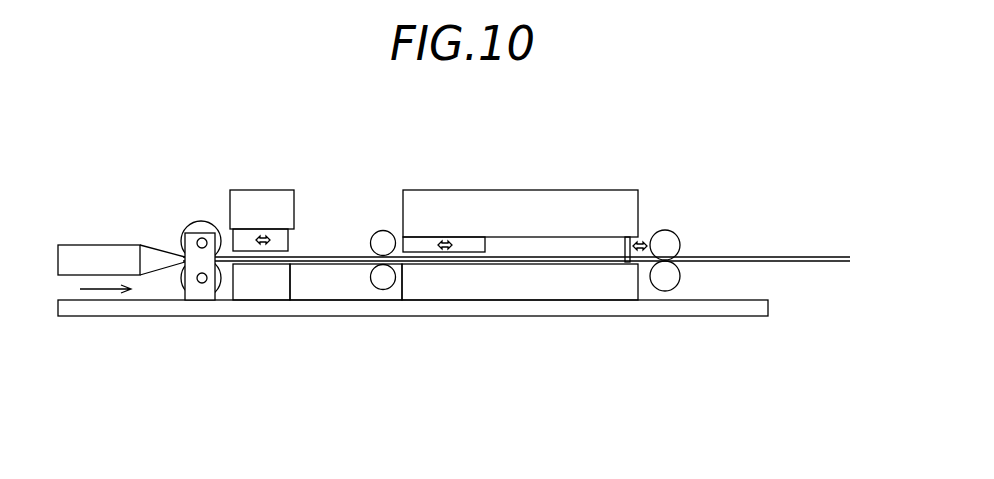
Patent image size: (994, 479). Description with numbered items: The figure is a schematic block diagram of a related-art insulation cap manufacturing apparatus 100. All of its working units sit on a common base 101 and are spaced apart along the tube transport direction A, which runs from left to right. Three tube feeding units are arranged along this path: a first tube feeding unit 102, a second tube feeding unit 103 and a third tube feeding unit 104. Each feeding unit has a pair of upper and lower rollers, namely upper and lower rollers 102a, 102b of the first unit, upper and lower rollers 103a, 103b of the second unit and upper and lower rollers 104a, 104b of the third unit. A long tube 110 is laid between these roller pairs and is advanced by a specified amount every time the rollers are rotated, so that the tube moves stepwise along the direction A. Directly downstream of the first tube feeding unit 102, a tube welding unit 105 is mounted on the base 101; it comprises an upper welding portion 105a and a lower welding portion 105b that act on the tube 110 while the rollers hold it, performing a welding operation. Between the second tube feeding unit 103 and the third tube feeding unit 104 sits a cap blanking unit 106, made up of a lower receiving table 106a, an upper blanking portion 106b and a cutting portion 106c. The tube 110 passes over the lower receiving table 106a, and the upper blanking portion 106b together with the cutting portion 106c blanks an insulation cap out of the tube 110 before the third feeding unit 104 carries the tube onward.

The insulation cap manufacturing apparatus 100 is at (150, 154).
The base 101 is at (477, 303).
The first tube feeding unit 102 is at (225, 418).
The upper roller 102a is at (216, 300).
The lower roller 102b is at (183, 280).
The second tube feeding unit 103 is at (403, 155).
The upper roller 103a is at (386, 240).
The lower roller 103b is at (375, 278).
The third tube feeding unit 104 is at (790, 166).
The upper roller 104a is at (670, 244).
The lower roller 104b is at (670, 275).
The tube welding unit 105 is at (260, 190).
The upper welding portion 105a is at (238, 190).
The lower welding portion 105b is at (265, 285).
The cap blanking unit 106 is at (530, 191).
The lower receiving table 106a is at (550, 285).
The upper blanking portion 106b is at (470, 245).
The cutting portion 106c is at (627, 247).
The long tube 110 is at (332, 265).
The tube transport direction A is at (96, 293).